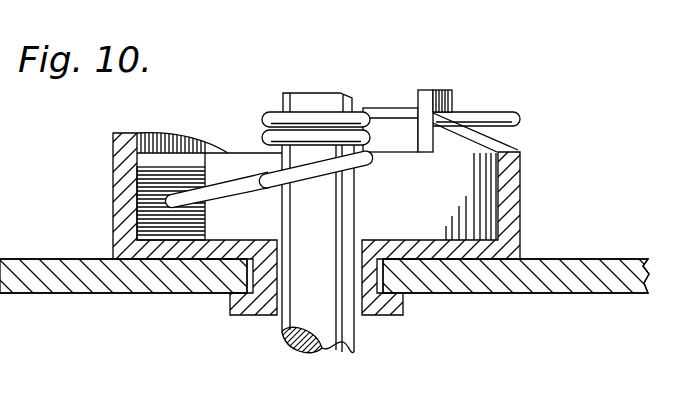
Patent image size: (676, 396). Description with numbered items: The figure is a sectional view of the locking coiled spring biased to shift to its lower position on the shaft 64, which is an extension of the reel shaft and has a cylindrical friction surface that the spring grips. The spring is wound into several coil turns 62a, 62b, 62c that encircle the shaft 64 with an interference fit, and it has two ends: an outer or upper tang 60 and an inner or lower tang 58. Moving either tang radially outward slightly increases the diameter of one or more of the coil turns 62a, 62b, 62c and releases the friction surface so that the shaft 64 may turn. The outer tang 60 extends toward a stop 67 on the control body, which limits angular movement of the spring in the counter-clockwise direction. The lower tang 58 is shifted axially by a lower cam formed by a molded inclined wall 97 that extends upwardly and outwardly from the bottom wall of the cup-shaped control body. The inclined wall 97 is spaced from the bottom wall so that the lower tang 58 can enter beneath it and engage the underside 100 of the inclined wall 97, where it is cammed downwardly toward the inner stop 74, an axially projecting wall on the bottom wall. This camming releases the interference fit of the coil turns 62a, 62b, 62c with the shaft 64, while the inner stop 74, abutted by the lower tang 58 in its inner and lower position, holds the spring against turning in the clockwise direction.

The inner tang 58 is at (233, 188).
The outer tang 60 is at (505, 110).
The coil turn 62a is at (266, 120).
The coil turn 62b is at (264, 136).
The coil turn 62c is at (367, 163).
The shaft 64 is at (338, 332).
The stop 67 is at (443, 90).
The inner stop 74 is at (137, 232).
The inclined wall 97 is at (153, 167).
The underside of inclined wall 100 is at (150, 183).